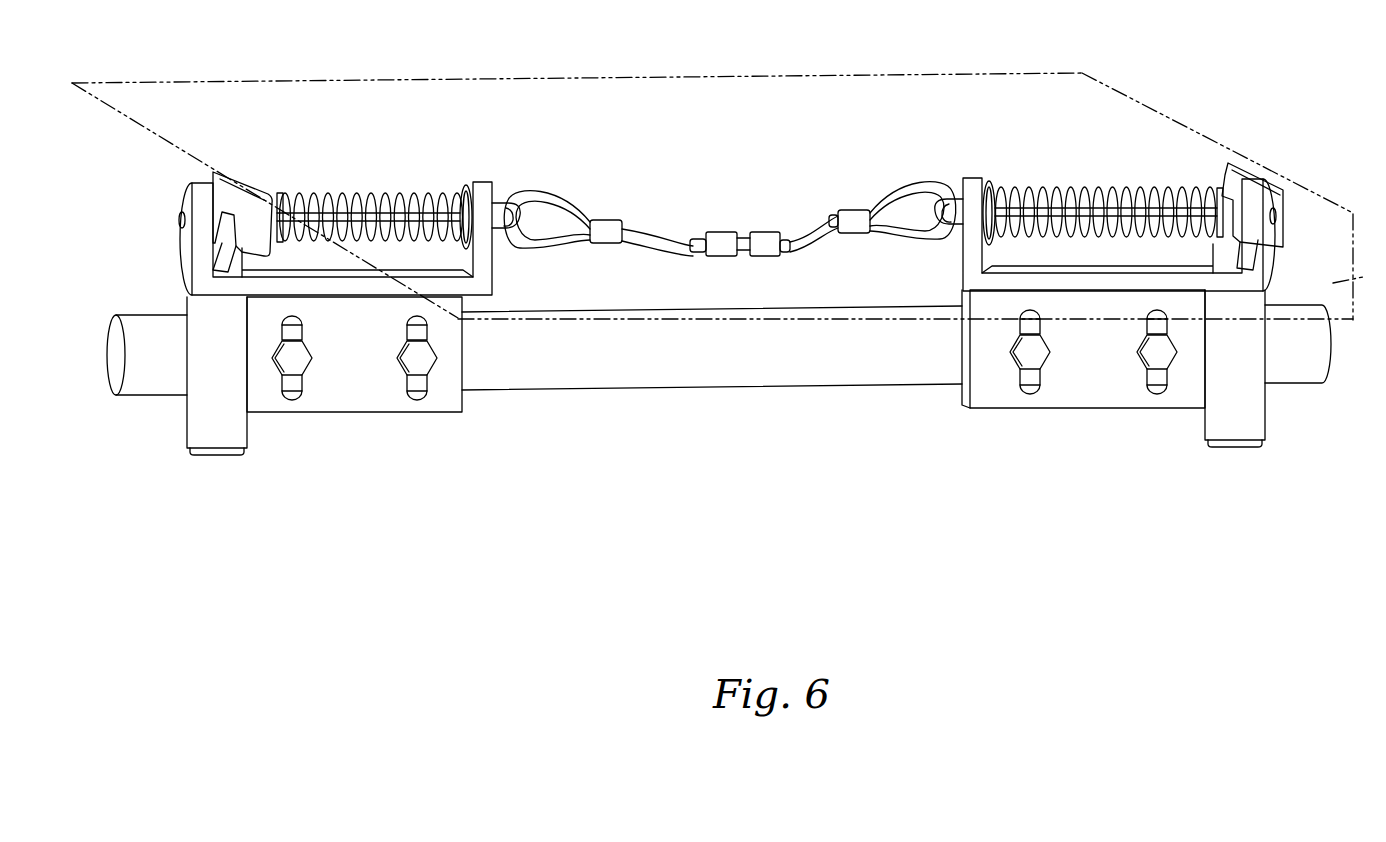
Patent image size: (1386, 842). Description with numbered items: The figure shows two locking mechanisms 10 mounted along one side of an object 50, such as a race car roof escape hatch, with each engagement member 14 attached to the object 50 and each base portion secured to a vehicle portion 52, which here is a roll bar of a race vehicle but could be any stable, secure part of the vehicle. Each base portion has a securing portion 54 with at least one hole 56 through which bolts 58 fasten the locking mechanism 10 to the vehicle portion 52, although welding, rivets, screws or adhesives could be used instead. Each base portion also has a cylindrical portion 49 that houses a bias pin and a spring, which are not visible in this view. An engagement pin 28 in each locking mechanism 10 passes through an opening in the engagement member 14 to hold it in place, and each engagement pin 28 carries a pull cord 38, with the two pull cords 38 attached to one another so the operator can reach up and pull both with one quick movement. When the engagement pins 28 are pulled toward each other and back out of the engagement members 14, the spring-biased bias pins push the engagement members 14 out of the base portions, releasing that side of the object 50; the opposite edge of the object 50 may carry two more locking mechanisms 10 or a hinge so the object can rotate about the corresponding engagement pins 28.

The locking mechanism 10 is at (400, 114).
The engagement member 14 is at (233, 200).
The engagement pin 28 is at (514, 200).
The pull cord 38 is at (567, 200).
The cylindrical portion 49 is at (213, 427).
The object 50 is at (682, 120).
The vehicle portion 52 is at (683, 388).
The securing portion 54 is at (430, 397).
The hole 56 is at (288, 392).
The bolts 58 is at (410, 357).